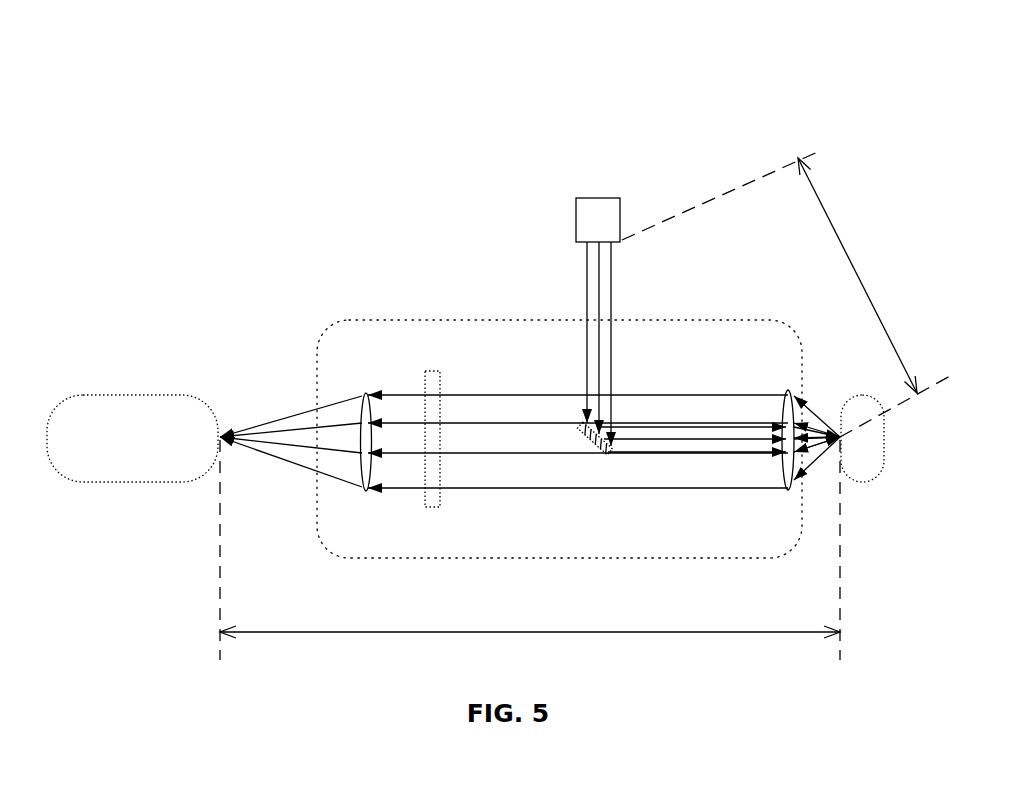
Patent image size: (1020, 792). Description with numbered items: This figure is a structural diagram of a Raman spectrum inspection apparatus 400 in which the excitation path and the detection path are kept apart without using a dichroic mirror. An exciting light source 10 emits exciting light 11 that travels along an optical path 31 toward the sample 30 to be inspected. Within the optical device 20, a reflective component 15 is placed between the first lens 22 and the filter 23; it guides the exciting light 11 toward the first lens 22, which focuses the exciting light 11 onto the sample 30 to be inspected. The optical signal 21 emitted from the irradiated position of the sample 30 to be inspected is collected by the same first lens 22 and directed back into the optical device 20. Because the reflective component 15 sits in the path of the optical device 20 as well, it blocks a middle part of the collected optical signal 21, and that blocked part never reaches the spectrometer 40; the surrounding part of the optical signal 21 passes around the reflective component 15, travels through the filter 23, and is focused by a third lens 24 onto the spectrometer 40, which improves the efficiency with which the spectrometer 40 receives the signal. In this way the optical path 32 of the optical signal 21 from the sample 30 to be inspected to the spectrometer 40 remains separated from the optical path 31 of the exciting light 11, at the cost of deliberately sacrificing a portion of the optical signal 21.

The Raman spectrum inspection apparatus 400 is at (568, 85).
The exciting light source 10 is at (600, 197).
The exciting light 11 is at (585, 302).
The reflective component 15 is at (580, 425).
The optical device 20 is at (422, 332).
The optical signal 21 is at (623, 472).
The first lens 22 is at (788, 475).
The filter 23 is at (432, 498).
The third lens 24 is at (363, 463).
The sample to be inspected 30 is at (885, 462).
The optical path 31 is at (786, 293).
The optical path 32 is at (530, 550).
The spectrometer 40 is at (183, 395).